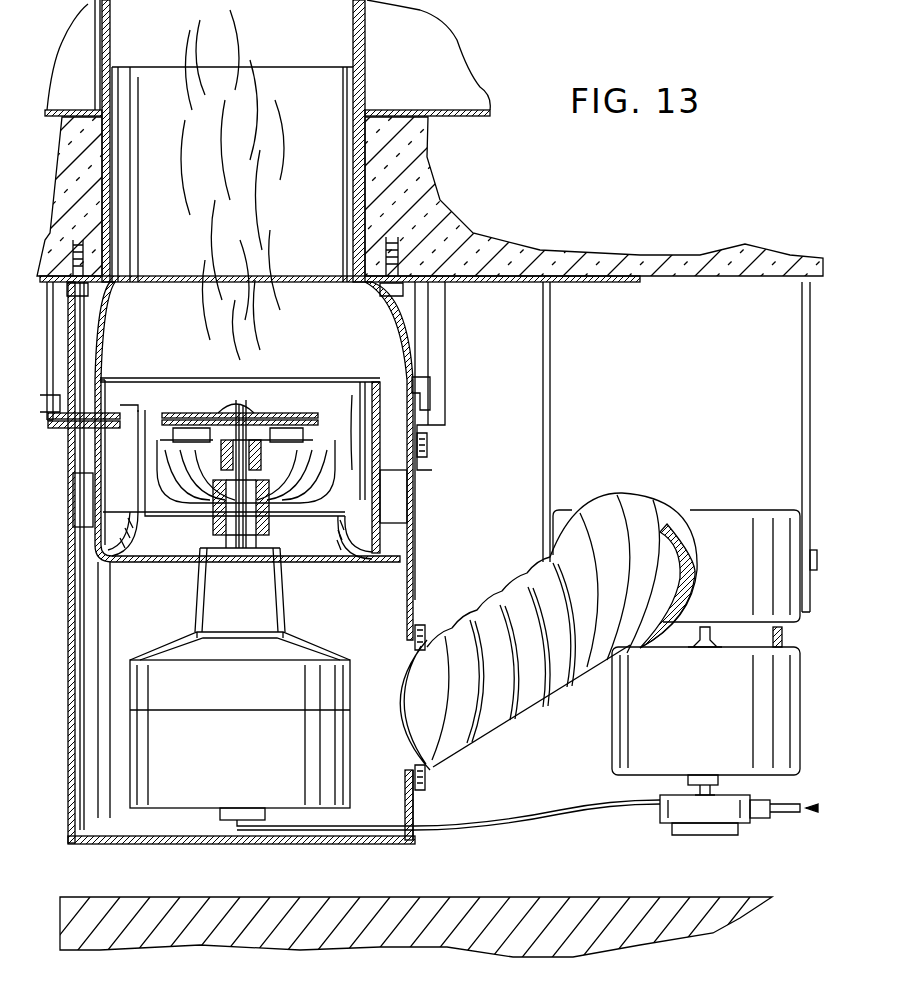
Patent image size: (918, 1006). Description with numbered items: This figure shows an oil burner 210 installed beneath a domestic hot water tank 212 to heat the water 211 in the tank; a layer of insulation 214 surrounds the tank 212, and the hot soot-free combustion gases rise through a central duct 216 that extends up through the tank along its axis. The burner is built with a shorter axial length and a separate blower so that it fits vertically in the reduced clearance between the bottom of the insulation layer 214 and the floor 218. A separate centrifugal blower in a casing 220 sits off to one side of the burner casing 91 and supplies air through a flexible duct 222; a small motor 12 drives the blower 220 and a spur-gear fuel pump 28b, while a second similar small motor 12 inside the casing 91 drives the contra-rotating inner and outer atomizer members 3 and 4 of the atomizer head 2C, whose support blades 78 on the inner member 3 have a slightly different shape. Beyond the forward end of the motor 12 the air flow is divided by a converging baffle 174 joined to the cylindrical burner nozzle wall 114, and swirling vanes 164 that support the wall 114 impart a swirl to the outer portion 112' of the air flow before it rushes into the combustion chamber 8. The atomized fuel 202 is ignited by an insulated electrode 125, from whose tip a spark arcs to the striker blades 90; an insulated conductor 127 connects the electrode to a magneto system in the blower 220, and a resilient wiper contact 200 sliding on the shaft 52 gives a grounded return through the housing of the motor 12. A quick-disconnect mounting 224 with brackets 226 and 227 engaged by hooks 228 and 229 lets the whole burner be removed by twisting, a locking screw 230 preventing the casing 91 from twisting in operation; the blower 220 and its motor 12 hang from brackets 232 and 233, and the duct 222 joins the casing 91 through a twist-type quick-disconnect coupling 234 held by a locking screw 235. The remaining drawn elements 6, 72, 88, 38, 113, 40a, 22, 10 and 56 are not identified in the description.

The water 211 is at (88, 84).
The central duct 216 is at (368, 26).
The hot water tank 212 is at (470, 100).
The layer of insulation 214 is at (430, 180).
The combustion chamber 8 is at (290, 209).
The flame 6 is at (235, 257).
The oil burner 210 is at (727, 343).
The bracket 227 is at (447, 318).
The quick-disconnect mounting 224 is at (448, 366).
The hook 229 is at (430, 393).
The locking screw 230 is at (430, 447).
The bracket 232 is at (551, 434).
The bracket 233 is at (808, 406).
The blower casing 220 is at (722, 508).
The swirling vanes 164 is at (400, 490).
The burner casing 91 is at (412, 526).
The striker blades 90 is at (332, 412).
The inner atomizer member 3 is at (312, 384).
The burner plate 72 is at (242, 410).
The igniter 88 is at (238, 406).
The atomized fuel 202 is at (130, 410).
The insulated electrode 125 is at (136, 402).
The outer atomizer member 4 is at (141, 396).
The atomizer head 2C is at (163, 374).
The bracket 226 is at (48, 305).
The hook 228 is at (62, 400).
The insulated conductor 127 is at (58, 475).
The support blades 78 is at (175, 447).
The converging baffle 174 is at (140, 546).
The cylindrical burner nozzle wall 114 is at (372, 500).
The shaft 52 is at (248, 548).
The coupling housing 38 is at (241, 526).
The resilient wiper contact 200 is at (240, 590).
The air passage 113 is at (170, 580).
The outer portion of the air flow 112' is at (376, 660).
The motor housing 40a is at (140, 657).
The motor 12 is at (247, 769).
The quick-disconnect coupling 234 is at (428, 620).
The locking screw 235 is at (428, 778).
The flexible duct 222 is at (527, 720).
The support post 22 is at (784, 637).
The cable 10 is at (505, 818).
The spur-gear fuel pump 28b is at (703, 835).
The plug 56 is at (775, 813).
The floor 218 is at (572, 897).